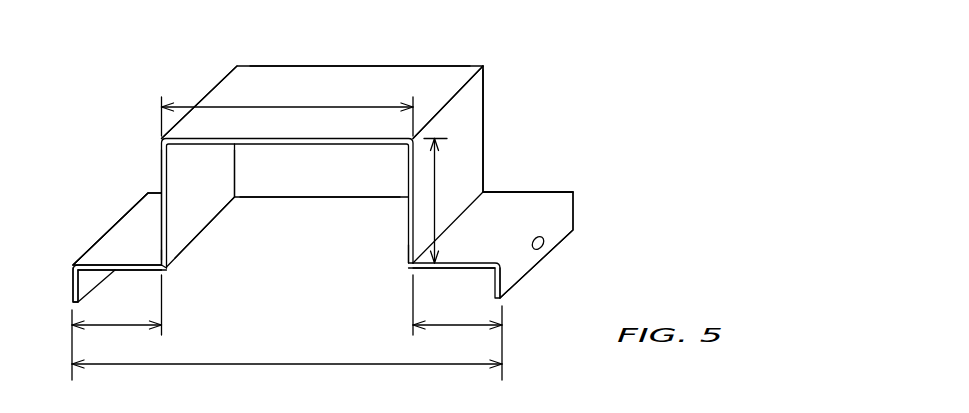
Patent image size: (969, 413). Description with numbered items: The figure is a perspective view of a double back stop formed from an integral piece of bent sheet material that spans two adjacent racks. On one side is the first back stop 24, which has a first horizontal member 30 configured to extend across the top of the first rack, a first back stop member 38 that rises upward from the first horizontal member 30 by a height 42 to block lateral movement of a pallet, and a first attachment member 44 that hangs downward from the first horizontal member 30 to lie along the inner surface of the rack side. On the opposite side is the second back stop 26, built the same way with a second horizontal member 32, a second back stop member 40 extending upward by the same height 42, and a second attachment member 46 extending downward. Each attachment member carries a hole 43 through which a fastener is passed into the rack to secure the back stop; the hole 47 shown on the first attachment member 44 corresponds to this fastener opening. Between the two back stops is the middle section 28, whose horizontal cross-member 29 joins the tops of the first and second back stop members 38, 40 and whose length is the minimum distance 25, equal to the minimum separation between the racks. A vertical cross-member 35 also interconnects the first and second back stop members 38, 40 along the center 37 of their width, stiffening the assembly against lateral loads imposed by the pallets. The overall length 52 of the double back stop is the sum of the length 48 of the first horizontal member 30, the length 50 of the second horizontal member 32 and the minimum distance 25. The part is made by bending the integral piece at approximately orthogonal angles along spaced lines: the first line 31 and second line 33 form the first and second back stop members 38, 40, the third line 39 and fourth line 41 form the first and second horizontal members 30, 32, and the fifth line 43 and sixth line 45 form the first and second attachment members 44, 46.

The first back stop 24 is at (537, 152).
The minimum distance 25 is at (288, 107).
The second back stop 26 is at (98, 196).
The middle section 28 is at (282, 55).
The horizontal cross-member 29 is at (340, 78).
The first horizontal member 30 is at (470, 270).
The first line 31 is at (465, 88).
The second horizontal member 32 is at (116, 271).
The second line 33 is at (222, 80).
The vertical cross-member 35 is at (360, 182).
The center 37 is at (236, 198).
The first back stop member 38 is at (472, 141).
The third line 39 is at (410, 265).
The second back stop member 40 is at (160, 170).
The fourth line 41 is at (167, 268).
The height 42 is at (437, 172).
The hole 43 is at (568, 196).
The first attachment member 44 is at (522, 262).
The sixth line 45 is at (108, 232).
The second attachment member 46 is at (72, 286).
The mounting hole 47 is at (548, 243).
The length of the first horizontal member 48 is at (470, 325).
The length of the second horizontal member 50 is at (106, 325).
The length of the double back stop 52 is at (287, 364).